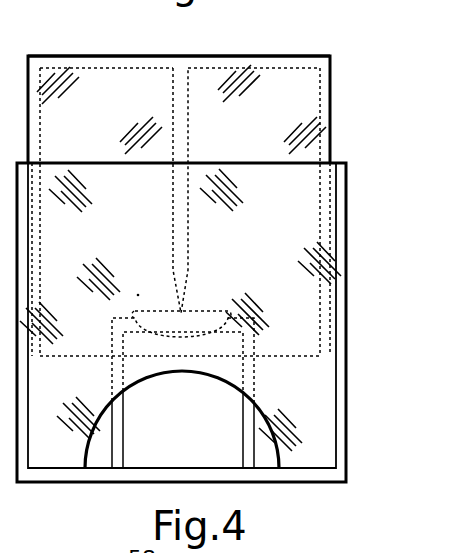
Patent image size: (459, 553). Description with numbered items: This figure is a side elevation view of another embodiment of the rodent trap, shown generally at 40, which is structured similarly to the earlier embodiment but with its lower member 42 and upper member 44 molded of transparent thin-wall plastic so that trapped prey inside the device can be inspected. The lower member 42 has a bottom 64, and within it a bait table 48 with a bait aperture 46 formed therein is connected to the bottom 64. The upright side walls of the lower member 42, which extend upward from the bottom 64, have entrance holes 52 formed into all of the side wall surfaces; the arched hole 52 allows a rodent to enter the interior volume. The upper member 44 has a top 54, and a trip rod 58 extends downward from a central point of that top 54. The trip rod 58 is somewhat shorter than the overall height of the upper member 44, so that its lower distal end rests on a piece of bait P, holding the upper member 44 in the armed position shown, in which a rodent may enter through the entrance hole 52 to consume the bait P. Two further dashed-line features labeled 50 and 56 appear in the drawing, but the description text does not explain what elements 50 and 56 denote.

The rodent trap embodiment 40 is at (360, 101).
The lower member 42 is at (346, 270).
The upper member 44 is at (332, 72).
The bait aperture 46 is at (212, 310).
The bait table 48 is at (258, 318).
The rim 50 is at (267, 163).
The entrance hole 52 is at (279, 443).
The top 54 is at (104, 56).
The partition 56 is at (305, 356).
The trip rod 58 is at (168, 103).
The bottom 64 is at (132, 470).
The bait P is at (151, 312).